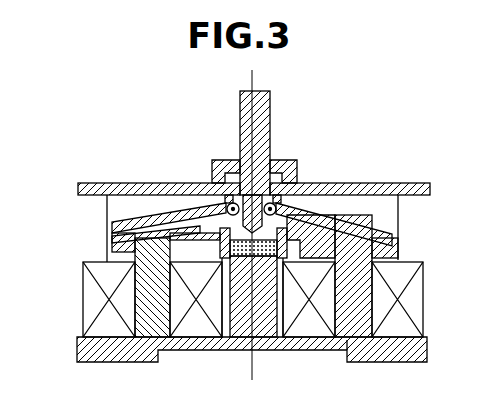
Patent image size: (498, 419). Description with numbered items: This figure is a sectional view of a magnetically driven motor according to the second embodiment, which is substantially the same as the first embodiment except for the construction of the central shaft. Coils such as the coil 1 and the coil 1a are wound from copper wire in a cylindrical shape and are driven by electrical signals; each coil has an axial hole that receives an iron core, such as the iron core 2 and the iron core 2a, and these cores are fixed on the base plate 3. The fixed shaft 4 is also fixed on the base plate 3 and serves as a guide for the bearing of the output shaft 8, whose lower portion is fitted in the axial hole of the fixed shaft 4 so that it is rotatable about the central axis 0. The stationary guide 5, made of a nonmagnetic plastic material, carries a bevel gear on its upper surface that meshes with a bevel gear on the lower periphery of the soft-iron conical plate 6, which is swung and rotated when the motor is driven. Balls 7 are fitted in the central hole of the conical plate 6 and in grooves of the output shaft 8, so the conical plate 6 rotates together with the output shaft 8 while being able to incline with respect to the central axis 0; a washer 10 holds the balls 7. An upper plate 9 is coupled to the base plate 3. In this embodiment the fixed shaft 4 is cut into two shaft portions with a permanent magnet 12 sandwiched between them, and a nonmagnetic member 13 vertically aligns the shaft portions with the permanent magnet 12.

The central axis 0 is at (252, 235).
The coil 1 is at (425, 310).
The coil 1a is at (417, 264).
The iron core 2 is at (378, 288).
The iron core 2a is at (366, 300).
The base plate 3 is at (80, 350).
The fixed shaft 4 is at (238, 330).
The stationary guide 5 is at (118, 256).
The conical plate 6 is at (340, 236).
The balls 7 is at (293, 184).
The output shaft 8 is at (266, 119).
The upper plate 9 is at (425, 187).
The washer 10 is at (220, 187).
The permanent magnet 12 is at (274, 265).
The nonmagnetic member 13 is at (300, 265).